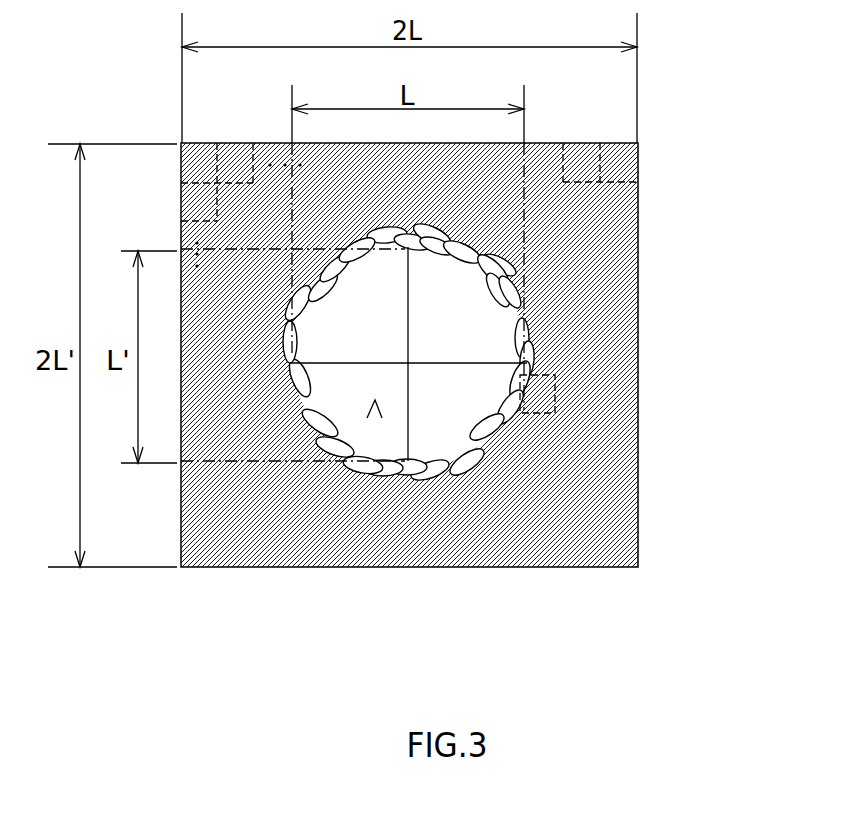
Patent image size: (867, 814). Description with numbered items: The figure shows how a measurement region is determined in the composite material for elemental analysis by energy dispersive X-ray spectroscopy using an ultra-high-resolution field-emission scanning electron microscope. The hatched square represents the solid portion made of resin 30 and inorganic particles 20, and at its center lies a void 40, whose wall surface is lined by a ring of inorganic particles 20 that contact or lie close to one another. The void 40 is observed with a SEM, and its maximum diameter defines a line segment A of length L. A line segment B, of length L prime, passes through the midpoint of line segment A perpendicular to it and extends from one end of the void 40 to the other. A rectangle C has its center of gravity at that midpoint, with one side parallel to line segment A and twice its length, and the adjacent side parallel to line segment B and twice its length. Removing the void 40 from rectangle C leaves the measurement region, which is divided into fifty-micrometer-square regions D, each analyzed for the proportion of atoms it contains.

The inorganic particles 20 is at (480, 462).
The resin 30 is at (578, 530).
The void 40 is at (375, 400).
The line segment A is at (445, 357).
The line segment B is at (408, 272).
The rectangle C is at (639, 524).
The region D is at (633, 157).